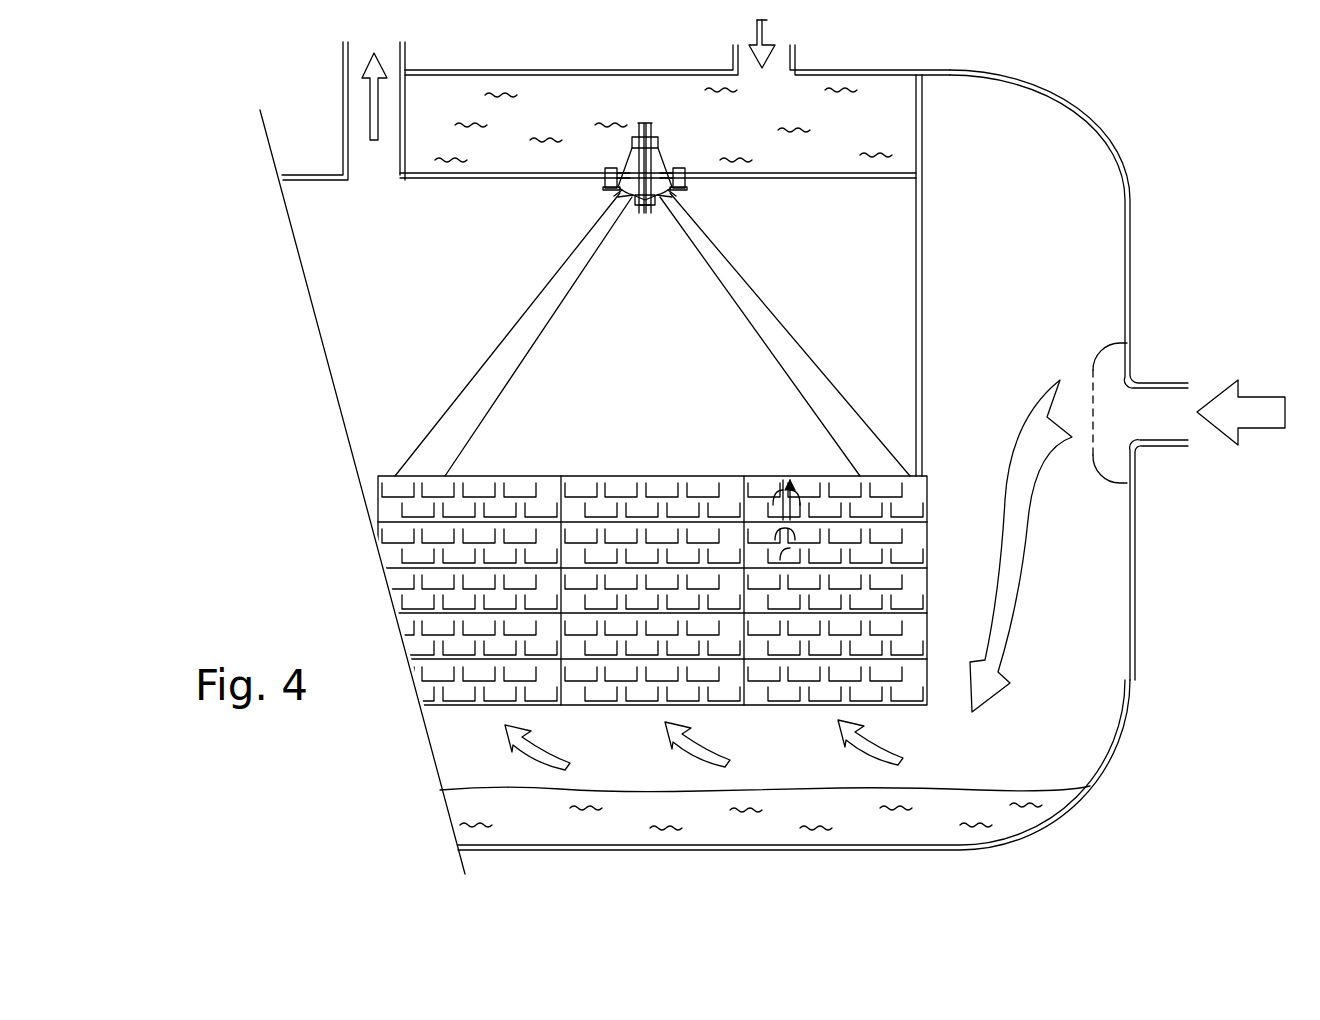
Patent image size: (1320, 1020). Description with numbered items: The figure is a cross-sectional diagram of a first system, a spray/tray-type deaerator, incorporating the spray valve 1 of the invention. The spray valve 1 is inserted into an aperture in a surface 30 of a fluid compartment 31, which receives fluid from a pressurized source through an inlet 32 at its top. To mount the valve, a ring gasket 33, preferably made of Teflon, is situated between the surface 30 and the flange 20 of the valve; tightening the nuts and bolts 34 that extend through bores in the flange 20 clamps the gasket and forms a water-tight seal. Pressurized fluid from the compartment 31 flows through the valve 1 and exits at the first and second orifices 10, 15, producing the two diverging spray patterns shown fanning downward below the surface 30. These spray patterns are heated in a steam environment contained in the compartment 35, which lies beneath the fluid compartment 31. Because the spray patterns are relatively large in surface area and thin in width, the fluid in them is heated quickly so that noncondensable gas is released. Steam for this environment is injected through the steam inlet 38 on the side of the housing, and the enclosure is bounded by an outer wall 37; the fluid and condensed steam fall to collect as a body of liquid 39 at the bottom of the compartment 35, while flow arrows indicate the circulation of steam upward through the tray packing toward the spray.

The spray valve 1 is at (637, 188).
The first orifice 10 is at (632, 203).
The second orifice 15 is at (614, 199).
The flange 20 is at (598, 181).
The surface 30 is at (833, 182).
The fluid compartment 31 is at (888, 92).
The inlet 32 is at (800, 58).
The ring gasket 33 is at (695, 184).
The nuts and bolts 34 is at (680, 197).
The compartment 35 is at (905, 280).
The housing side wall 37 is at (1112, 568).
The steam inlet 38 is at (1158, 380).
The collection sump liquid 39 is at (1032, 816).